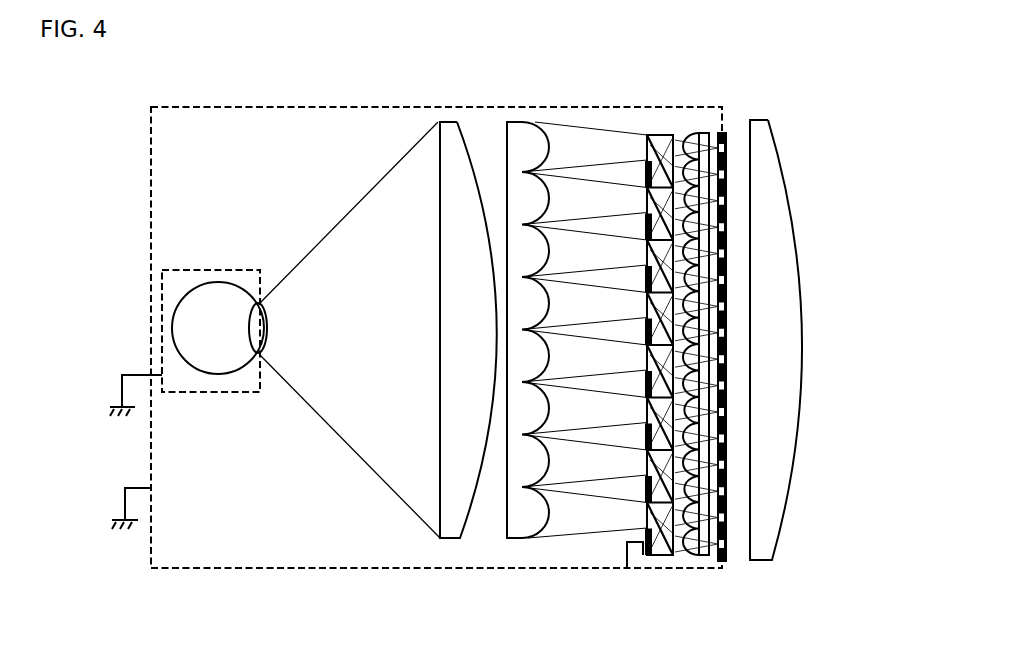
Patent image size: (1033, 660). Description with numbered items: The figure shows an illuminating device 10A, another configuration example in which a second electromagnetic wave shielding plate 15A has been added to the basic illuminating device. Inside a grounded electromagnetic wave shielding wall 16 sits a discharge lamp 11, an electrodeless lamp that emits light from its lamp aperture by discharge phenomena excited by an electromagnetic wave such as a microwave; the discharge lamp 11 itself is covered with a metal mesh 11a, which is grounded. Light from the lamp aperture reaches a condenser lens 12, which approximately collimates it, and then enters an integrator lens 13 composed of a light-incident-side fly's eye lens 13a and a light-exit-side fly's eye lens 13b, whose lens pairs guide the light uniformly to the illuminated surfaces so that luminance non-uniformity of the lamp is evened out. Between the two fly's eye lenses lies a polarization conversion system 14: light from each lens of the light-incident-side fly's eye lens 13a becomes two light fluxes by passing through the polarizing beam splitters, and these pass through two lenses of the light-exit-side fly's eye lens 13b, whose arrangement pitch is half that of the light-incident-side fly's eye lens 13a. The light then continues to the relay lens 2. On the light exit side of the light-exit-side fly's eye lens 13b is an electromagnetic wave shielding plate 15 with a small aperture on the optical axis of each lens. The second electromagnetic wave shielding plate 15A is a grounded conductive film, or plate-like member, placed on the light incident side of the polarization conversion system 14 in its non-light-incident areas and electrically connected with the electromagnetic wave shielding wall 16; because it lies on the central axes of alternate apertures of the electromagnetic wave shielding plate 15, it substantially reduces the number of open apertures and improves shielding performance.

The relay lens 2 is at (770, 545).
The illuminating device 10A is at (130, 142).
The discharge lamp 11 is at (222, 289).
The metal mesh 11a is at (216, 394).
The condenser lens 12 is at (448, 535).
The integrator lens 13 is at (720, 619).
The light-incident-side fly's eye lens 13a is at (516, 532).
The light-exit-side fly's eye lens 13b is at (700, 547).
The polarization conversion system 14 is at (663, 136).
The electromagnetic wave shielding plate 15 is at (726, 132).
The second electromagnetic wave shielding plate 15A is at (642, 548).
The electromagnetic wave shielding wall 16 is at (220, 567).